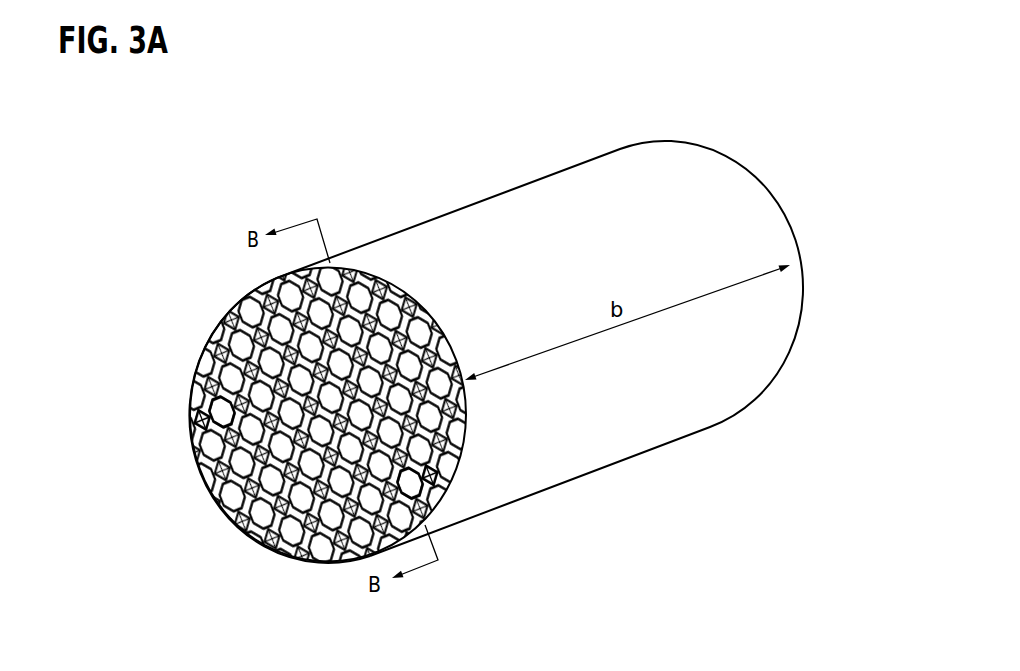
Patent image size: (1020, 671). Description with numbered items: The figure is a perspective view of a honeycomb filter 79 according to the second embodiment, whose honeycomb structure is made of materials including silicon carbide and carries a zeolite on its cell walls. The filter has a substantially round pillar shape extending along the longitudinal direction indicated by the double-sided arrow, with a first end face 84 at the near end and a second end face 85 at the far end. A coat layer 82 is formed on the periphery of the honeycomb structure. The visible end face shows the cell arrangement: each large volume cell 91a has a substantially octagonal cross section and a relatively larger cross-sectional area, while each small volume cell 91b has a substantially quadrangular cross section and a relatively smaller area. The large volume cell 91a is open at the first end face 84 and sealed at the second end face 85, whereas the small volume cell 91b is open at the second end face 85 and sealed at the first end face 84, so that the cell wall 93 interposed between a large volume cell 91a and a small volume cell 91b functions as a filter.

The honeycomb filter 79 is at (487, 351).
The second end face 85 is at (766, 181).
The coat layer 82 is at (212, 333).
The first end face 84 is at (203, 416).
The large volume cell 91a is at (408, 483).
The small volume cell 91b is at (440, 482).
The cell wall 93 is at (280, 548).